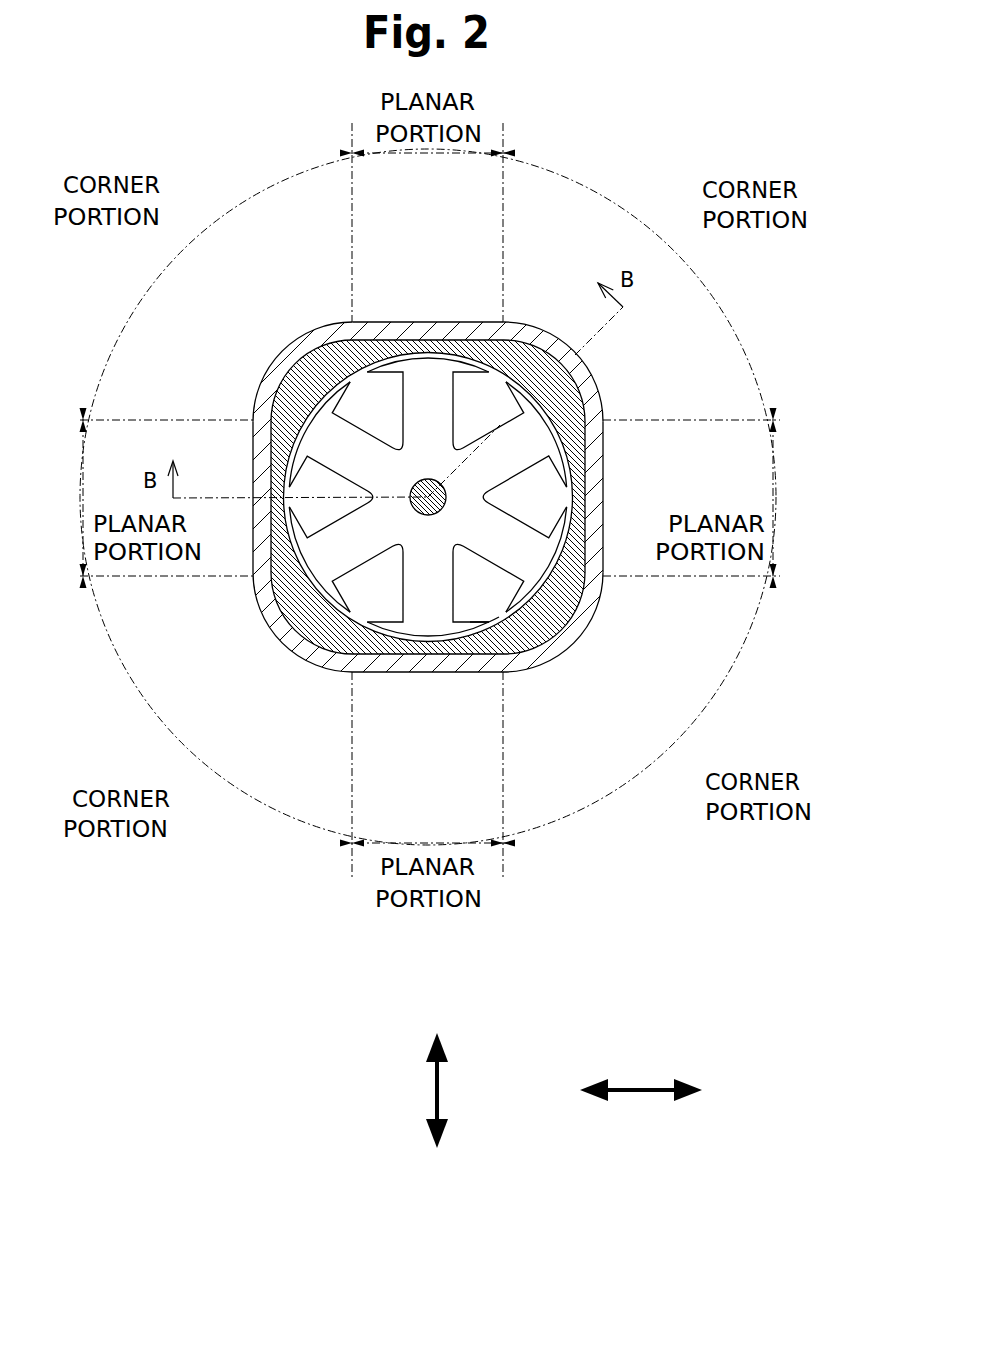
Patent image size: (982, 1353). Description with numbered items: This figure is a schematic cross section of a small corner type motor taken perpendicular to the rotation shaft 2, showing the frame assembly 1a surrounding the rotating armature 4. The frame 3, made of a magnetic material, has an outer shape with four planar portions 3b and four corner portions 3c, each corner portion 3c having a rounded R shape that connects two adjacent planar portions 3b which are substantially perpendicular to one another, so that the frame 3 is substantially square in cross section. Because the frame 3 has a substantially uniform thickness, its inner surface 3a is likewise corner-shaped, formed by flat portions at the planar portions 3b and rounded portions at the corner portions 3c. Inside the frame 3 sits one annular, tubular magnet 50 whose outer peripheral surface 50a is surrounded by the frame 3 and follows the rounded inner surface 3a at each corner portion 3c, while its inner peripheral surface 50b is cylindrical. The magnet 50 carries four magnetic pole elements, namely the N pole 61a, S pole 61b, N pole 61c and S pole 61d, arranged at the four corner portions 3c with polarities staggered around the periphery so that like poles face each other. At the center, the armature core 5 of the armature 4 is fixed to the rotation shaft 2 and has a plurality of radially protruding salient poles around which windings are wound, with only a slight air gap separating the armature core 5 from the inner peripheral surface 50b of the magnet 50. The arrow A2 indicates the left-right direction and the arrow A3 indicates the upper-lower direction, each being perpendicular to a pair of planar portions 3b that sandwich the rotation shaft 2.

The frame assembly 1a is at (284, 282).
The rotation shaft 2 is at (446, 483).
The frame 3 is at (488, 305).
The inner surface 3a is at (586, 493).
The planar portion 3b is at (413, 320).
The corner portion 3c is at (285, 358).
The armature 4 is at (345, 634).
The armature core 5 is at (326, 326).
The magnet 50 is at (538, 333).
The outer peripheral surface 50a is at (473, 636).
The inner peripheral surface 50b is at (477, 617).
The N pole 61a is at (580, 370).
The S pole 61b is at (540, 657).
The N pole 61c is at (296, 646).
The S pole 61d is at (299, 366).
The arrow A2 is at (660, 1086).
The arrow A3 is at (435, 1080).